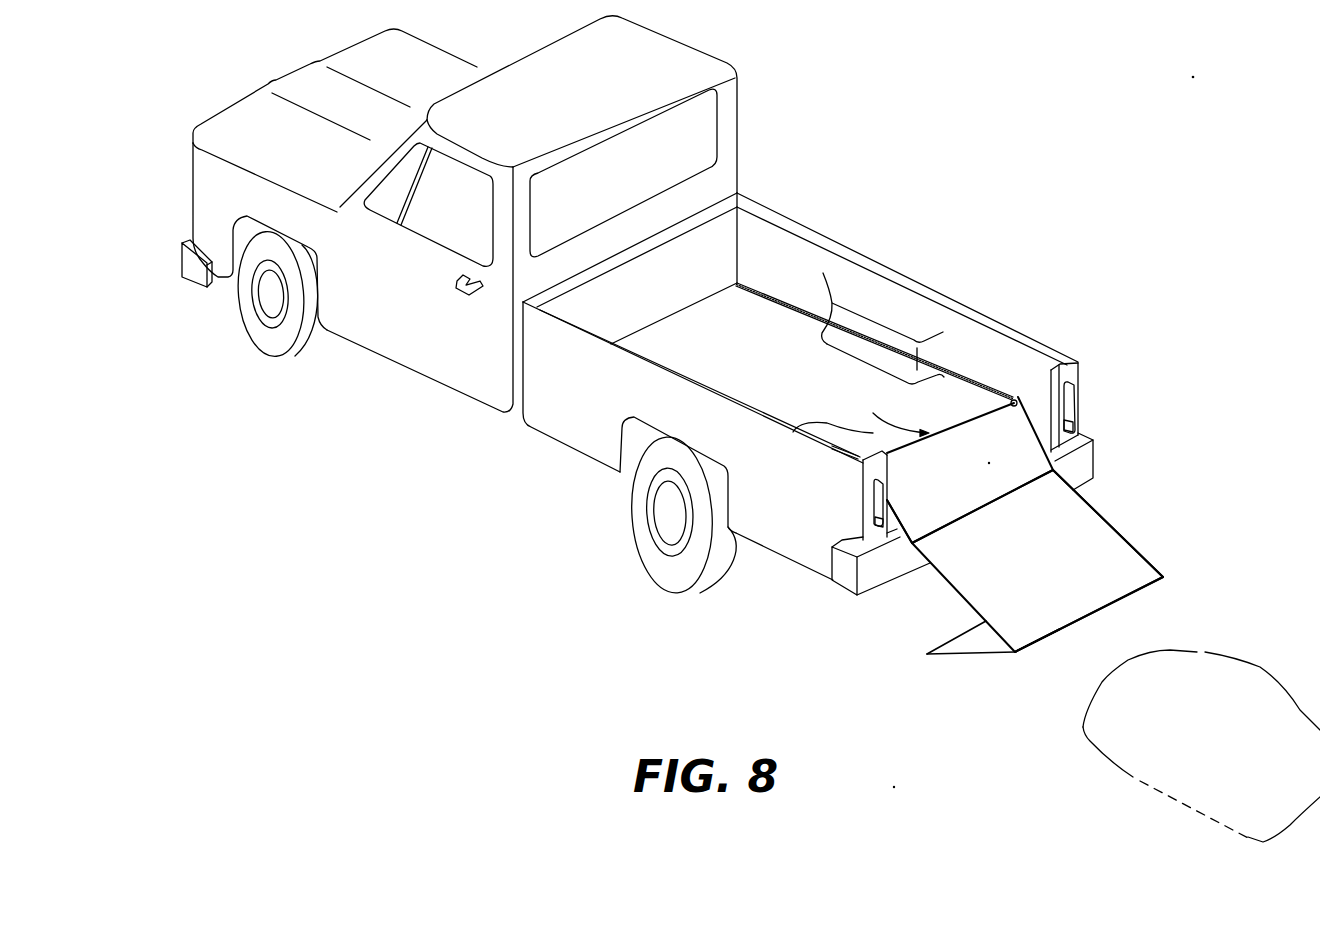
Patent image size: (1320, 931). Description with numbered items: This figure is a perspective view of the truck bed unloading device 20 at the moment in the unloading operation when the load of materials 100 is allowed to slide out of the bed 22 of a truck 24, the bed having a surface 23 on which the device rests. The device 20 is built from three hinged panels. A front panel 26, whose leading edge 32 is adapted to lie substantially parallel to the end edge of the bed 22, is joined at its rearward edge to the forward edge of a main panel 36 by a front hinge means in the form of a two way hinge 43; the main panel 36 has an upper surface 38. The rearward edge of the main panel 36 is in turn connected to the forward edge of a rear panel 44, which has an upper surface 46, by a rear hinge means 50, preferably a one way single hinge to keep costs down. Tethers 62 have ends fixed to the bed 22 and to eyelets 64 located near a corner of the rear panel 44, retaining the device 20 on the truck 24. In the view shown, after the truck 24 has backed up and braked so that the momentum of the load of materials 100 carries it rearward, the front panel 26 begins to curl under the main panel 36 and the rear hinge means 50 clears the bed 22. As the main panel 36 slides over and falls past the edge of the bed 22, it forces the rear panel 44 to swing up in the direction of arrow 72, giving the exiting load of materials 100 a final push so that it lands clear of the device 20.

The truck bed unloading device 20 is at (1078, 517).
The bed 22 is at (663, 348).
The surface 23 is at (727, 346).
The truck 24 is at (667, 319).
The front panel 26 is at (962, 657).
The leading edge 32 is at (948, 646).
The main panel 36 is at (1120, 558).
The upper surface 38 is at (1047, 577).
The two way hinge 43 is at (1021, 647).
The rear panel 44 is at (1028, 447).
The upper surface 46 is at (968, 490).
The rear hinge means 50 is at (910, 547).
The tethers 62 is at (750, 282).
The eyelets 64 is at (1014, 398).
The arrow 72 is at (793, 432).
The load of materials 100 is at (1173, 802).